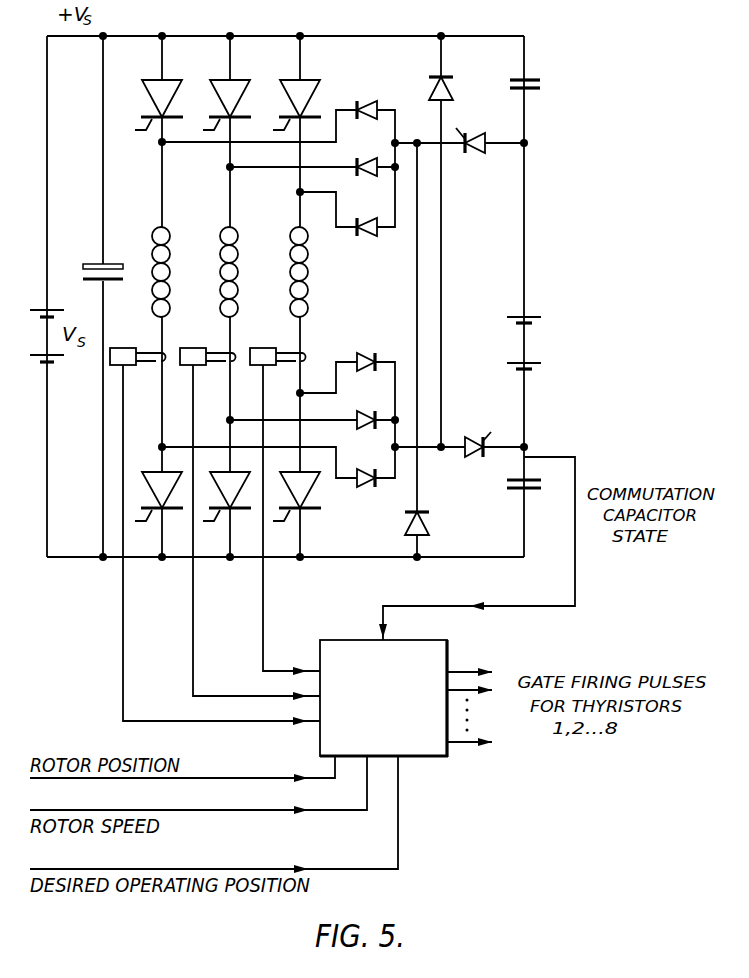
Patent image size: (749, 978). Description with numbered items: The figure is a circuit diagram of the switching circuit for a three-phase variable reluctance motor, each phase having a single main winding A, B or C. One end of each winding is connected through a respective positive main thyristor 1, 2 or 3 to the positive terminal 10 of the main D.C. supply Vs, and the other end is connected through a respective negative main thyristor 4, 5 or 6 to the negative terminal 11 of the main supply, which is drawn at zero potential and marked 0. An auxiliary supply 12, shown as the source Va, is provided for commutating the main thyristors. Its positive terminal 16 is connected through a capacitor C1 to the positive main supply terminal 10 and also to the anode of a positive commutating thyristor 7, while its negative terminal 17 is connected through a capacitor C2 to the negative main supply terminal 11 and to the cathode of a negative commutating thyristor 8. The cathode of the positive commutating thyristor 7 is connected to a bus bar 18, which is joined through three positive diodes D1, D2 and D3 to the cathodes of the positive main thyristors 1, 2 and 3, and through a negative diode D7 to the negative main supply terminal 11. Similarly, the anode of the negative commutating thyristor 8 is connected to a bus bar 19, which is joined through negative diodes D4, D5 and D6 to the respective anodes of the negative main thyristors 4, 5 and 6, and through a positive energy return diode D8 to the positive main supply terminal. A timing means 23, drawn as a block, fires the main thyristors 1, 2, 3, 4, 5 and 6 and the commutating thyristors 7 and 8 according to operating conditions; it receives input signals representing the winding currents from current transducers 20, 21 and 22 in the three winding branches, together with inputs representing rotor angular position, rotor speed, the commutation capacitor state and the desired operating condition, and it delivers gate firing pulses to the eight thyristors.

The positive main thyristor 1 is at (147, 94).
The positive main thyristor 2 is at (216, 94).
The positive main thyristor 3 is at (286, 94).
The negative main thyristor 4 is at (174, 499).
The negative main thyristor 5 is at (242, 499).
The negative main thyristor 6 is at (311, 509).
The positive commutating thyristor 7 is at (466, 137).
The negative commutating thyristor 8 is at (473, 460).
The positive terminal of main D.C. supply 10 is at (250, 36).
The negative terminal of main supply 11 is at (248, 561).
The zero potential node 0 is at (75, 575).
The auxiliary supply 12 is at (549, 328).
The positive terminal of auxiliary supply 16 is at (533, 144).
The negative terminal of auxiliary supply 17 is at (531, 445).
The bus bar 18 is at (400, 122).
The bus bar 19 is at (403, 389).
The current transducer 20 is at (123, 348).
The current transducer 21 is at (193, 348).
The current transducer 22 is at (263, 348).
The timing means 23 is at (420, 757).
The positive diode D1 is at (364, 101).
The positive diode D2 is at (377, 178).
The positive diode D3 is at (361, 236).
The negative diode D4 is at (360, 486).
The negative diode D5 is at (357, 431).
The negative diode D6 is at (360, 353).
The negative diode D7 is at (431, 525).
The positive energy return diode D8 is at (447, 90).
The capacitor C1 is at (545, 85).
The capacitor C2 is at (546, 489).
The main winding A is at (170, 272).
The main winding B is at (238, 272).
The main winding C is at (309, 272).